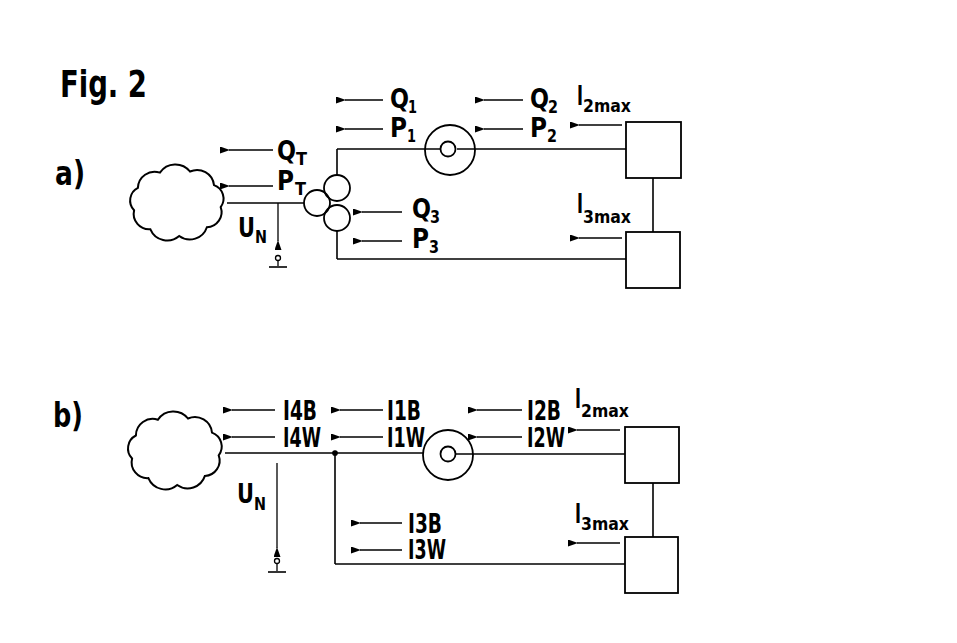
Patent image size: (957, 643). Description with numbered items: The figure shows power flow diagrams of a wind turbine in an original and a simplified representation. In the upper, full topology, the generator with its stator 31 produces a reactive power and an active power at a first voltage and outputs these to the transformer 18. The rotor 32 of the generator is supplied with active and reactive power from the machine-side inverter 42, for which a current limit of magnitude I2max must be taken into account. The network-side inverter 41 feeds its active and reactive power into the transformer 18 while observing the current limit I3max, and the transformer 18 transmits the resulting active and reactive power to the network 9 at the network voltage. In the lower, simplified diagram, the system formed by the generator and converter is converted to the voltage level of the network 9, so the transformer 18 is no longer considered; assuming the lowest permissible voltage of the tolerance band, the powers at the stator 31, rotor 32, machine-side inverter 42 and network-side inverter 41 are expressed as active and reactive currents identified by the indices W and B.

The network 9 is at (185, 216).
The transformer 18 is at (329, 230).
The stator 31 is at (445, 126).
The rotor 32 is at (448, 141).
The network-side inverter 41 is at (670, 258).
The machine-side inverter 42 is at (675, 143).